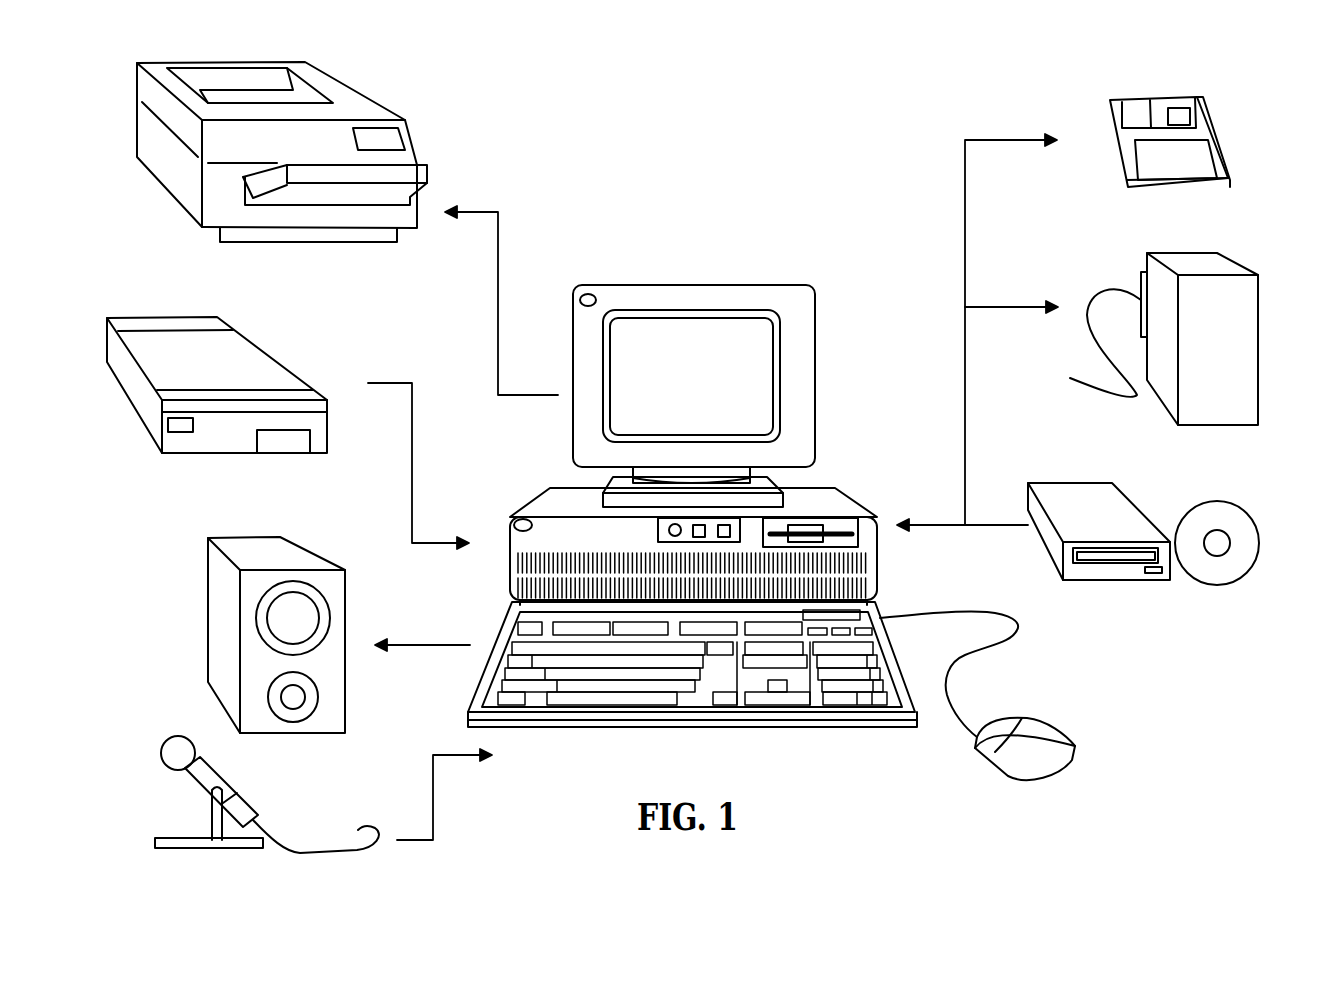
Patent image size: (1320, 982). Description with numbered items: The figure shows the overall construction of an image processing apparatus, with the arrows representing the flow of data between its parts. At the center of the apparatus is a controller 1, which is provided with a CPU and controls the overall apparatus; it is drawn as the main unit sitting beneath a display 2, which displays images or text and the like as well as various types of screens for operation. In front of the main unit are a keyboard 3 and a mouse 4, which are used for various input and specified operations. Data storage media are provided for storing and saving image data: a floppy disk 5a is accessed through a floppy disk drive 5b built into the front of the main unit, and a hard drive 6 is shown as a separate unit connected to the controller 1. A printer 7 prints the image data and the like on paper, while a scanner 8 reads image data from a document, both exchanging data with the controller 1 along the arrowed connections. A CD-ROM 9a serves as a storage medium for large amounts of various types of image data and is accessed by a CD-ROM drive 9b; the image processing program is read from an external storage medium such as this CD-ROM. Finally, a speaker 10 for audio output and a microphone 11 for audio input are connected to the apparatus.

The controller 1 is at (508, 545).
The display 2 is at (573, 366).
The keyboard 3 is at (500, 627).
The mouse 4 is at (1015, 752).
The floppy disk 5a is at (1202, 157).
The floppy disk drive 5b is at (843, 523).
The hard drive 6 is at (1217, 263).
The printer 7 is at (370, 108).
The scanner 8 is at (257, 365).
The CD-ROM 9a is at (1240, 520).
The CD-ROM drive 9b is at (1082, 502).
The speaker 10 is at (281, 549).
The microphone 11 is at (240, 800).